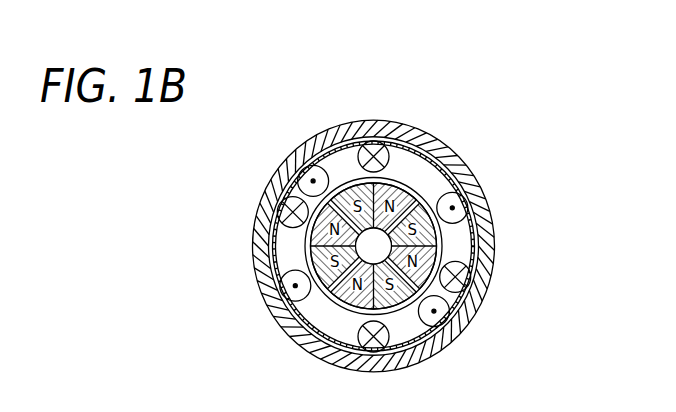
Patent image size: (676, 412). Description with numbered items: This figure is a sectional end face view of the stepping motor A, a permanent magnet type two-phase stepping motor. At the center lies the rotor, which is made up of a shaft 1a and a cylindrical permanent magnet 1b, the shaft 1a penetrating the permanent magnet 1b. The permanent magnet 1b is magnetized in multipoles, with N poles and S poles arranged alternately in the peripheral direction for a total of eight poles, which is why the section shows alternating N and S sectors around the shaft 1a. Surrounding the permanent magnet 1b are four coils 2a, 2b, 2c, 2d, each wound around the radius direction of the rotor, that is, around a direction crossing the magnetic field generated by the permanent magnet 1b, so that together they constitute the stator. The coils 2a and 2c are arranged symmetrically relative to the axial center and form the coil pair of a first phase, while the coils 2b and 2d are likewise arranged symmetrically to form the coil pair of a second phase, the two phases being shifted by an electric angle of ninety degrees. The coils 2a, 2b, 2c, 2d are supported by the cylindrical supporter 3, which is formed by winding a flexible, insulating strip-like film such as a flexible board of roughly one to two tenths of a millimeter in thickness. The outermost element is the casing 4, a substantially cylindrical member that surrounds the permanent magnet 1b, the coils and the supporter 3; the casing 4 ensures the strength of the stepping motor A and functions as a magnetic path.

The shaft 1a is at (337, 312).
The permanent magnet 1b is at (405, 180).
The coil 2a is at (448, 308).
The coil 2b is at (468, 208).
The coil 2c is at (299, 172).
The coil 2d is at (286, 294).
The supporter 3 is at (314, 362).
The casing 4 is at (446, 147).
The stepping motor A is at (537, 120).